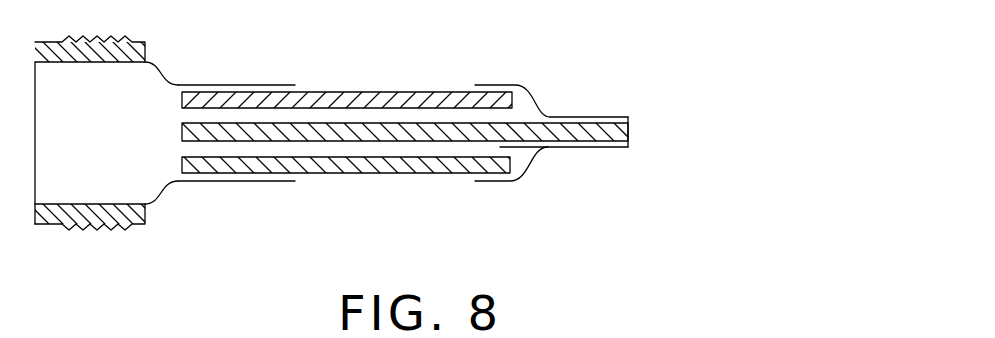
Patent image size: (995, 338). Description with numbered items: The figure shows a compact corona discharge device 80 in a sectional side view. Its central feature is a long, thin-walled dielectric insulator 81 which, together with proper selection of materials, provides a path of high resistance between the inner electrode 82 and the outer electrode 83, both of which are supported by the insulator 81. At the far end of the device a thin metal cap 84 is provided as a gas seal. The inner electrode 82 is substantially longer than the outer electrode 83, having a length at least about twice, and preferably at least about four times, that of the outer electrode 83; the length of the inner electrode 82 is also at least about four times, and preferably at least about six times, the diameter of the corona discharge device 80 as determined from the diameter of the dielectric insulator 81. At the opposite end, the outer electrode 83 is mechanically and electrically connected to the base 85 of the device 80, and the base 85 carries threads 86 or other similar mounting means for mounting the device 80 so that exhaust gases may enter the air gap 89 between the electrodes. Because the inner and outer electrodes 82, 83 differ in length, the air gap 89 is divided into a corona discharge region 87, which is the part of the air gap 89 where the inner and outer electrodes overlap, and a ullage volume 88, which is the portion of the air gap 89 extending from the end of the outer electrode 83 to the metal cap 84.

The compact corona discharge device 80 is at (422, 246).
The dielectric insulator 81 is at (413, 90).
The inner electrode 82 is at (605, 130).
The outer electrode 83 is at (248, 85).
The metal cap 84 is at (499, 85).
The base 85 is at (168, 77).
The threads 86 is at (105, 228).
The corona discharge region 87 is at (268, 150).
The ullage volume 88 is at (520, 148).
The air gap 89 is at (325, 115).